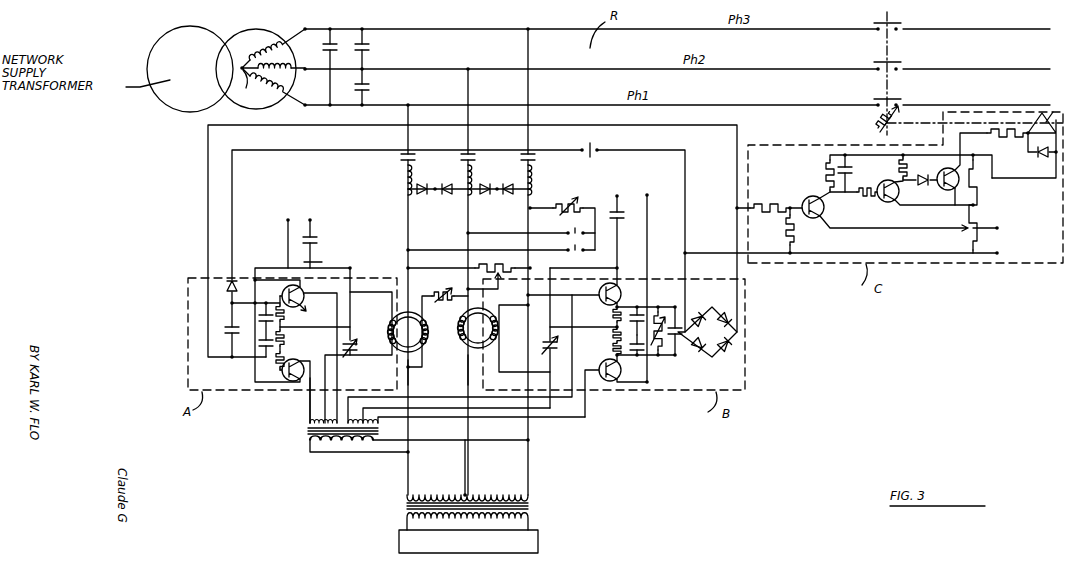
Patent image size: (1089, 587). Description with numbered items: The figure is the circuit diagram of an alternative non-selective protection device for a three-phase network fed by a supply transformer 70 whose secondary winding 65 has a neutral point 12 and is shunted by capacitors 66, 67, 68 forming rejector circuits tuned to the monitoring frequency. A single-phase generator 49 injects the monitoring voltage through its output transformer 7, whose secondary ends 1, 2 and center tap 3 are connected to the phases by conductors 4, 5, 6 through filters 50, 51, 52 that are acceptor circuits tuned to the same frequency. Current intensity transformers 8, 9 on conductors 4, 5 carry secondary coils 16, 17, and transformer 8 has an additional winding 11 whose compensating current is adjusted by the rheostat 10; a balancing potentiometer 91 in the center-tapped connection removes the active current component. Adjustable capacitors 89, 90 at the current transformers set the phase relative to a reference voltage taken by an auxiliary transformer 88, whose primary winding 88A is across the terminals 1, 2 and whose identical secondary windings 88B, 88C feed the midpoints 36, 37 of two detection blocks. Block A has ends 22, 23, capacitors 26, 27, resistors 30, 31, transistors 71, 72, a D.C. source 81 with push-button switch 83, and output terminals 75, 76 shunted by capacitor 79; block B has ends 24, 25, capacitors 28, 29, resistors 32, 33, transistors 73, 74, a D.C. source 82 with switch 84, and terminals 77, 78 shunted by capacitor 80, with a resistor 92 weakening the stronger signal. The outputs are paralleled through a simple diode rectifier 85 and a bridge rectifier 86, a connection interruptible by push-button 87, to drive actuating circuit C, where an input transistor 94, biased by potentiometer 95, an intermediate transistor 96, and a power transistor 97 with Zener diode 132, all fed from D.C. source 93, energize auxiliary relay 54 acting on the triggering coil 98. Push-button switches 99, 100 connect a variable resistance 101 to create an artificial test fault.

The network supply transformer 70 is at (234, 34).
The secondary winding 65 is at (265, 69).
The neutral point 12 is at (238, 83).
The capacitor 66 is at (337, 67).
The capacitor 67 is at (371, 49).
The capacitor 68 is at (371, 88).
The triggering coil 98 is at (877, 119).
The auxiliary relay 54 is at (1056, 114).
The conductor 4 is at (410, 299).
The conductor 5 is at (469, 281).
The conductor 6 is at (532, 261).
The filter 50 is at (398, 178).
The filter 51 is at (458, 178).
The filter 52 is at (518, 178).
The push-button switch 87 is at (578, 154).
The variable resistance 101 is at (561, 220).
The push-button switch 99 is at (530, 227).
The push-button switch 100 is at (500, 244).
The balancing potentiometer 91 is at (469, 262).
The rheostat 10 is at (453, 321).
The coil 16 is at (392, 322).
The additional winding 11 is at (426, 339).
The current intensity transformer 8 is at (415, 366).
The coil 17 is at (499, 332).
The current intensity transformer 9 is at (470, 356).
The capacitor 90 is at (555, 338).
The D.C. source 82 is at (640, 200).
The push-button switch 84 is at (626, 247).
The transistor 73 is at (615, 284).
The transistor 74 is at (608, 382).
The resistor 32 is at (612, 314).
The midpoint 37 is at (612, 330).
The resistor 33 is at (612, 348).
The end 24 is at (618, 306).
The capacitor 28 is at (640, 310).
The end 25 is at (638, 354).
The resistor 92 is at (662, 310).
The capacitor 29 is at (676, 356).
The rectifier 86 is at (740, 340).
The outlet terminal 77 is at (686, 303).
The capacitor 80 is at (690, 352).
The outlet terminal 78 is at (680, 368).
The outlet terminal 75 is at (228, 290).
The rectifier 85 is at (238, 278).
The capacitor 79 is at (226, 329).
The outlet terminal 76 is at (230, 360).
The capacitor 26 is at (260, 318).
The capacitor 27 is at (260, 344).
The resistor 30 is at (287, 316).
The midpoint 36 is at (294, 333).
The resistor 31 is at (288, 350).
The end 22 is at (295, 350).
The transistor 71 is at (308, 309).
The end 23 is at (302, 345).
The transistor 72 is at (296, 388).
The capacitor 89 is at (355, 356).
The D.C. source 81 is at (303, 236).
The push-button switch 83 is at (318, 244).
The auxiliary transformer 88 is at (292, 432).
The primary winding 88A is at (330, 450).
The secondary winding 88B is at (308, 424).
The secondary winding 88C is at (379, 424).
The output transformer 7 is at (532, 506).
The end 1 is at (460, 491).
The end 2 is at (538, 486).
The center tap 3 is at (470, 468).
The single-phase generator 49 is at (540, 541).
The input transistor 94 is at (814, 219).
The intermediate-stage transistor 96 is at (893, 204).
The Zener diode 132 is at (926, 170).
The power transistor 97 is at (946, 200).
The potentiometer 95 is at (981, 248).
The D.C. source 93 is at (1000, 241).